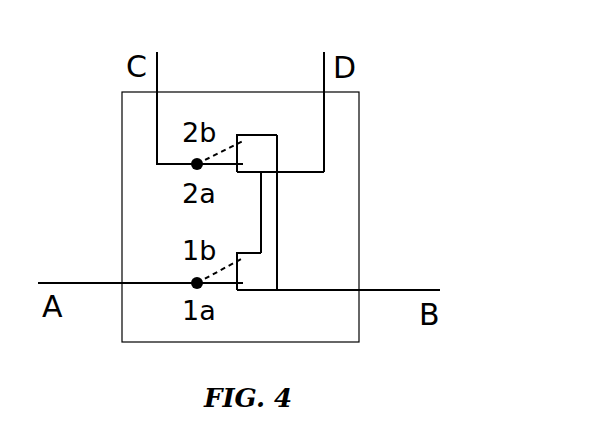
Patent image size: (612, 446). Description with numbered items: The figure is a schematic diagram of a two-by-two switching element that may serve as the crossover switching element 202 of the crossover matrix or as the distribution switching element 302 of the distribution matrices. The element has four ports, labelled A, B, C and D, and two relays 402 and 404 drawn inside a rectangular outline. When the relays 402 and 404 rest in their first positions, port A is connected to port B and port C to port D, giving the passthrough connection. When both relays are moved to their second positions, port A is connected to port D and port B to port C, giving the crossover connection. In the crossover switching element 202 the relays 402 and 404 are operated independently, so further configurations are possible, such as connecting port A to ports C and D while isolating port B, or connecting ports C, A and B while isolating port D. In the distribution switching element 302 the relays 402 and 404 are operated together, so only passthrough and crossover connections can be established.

The crossover switching element 202 is at (240, 217).
The distribution switching element 302 is at (240, 217).
The relay 402 is at (197, 283).
The relay 404 is at (197, 164).